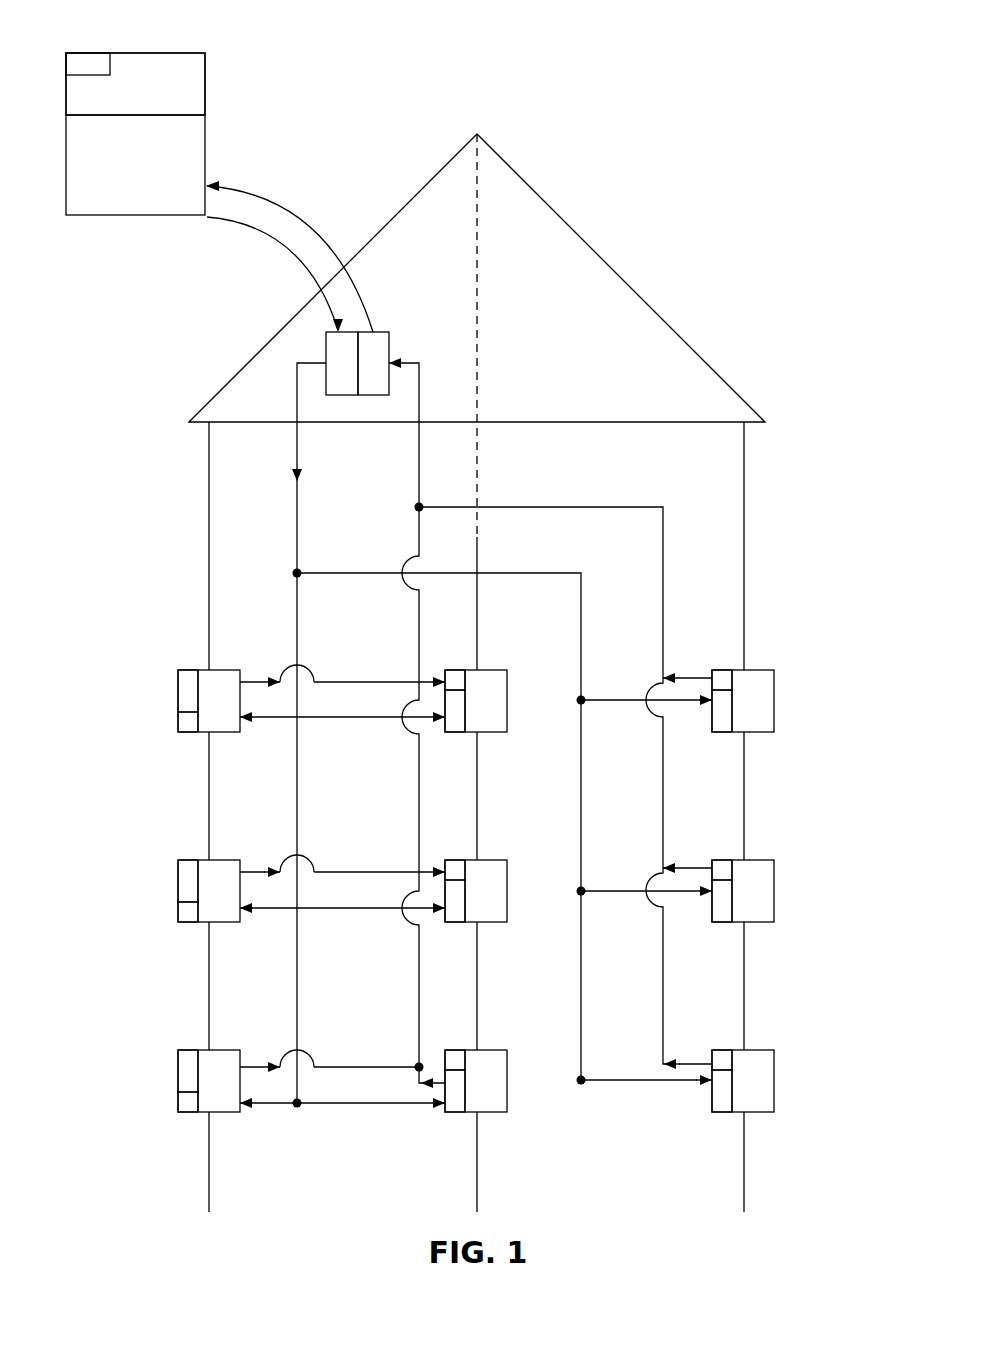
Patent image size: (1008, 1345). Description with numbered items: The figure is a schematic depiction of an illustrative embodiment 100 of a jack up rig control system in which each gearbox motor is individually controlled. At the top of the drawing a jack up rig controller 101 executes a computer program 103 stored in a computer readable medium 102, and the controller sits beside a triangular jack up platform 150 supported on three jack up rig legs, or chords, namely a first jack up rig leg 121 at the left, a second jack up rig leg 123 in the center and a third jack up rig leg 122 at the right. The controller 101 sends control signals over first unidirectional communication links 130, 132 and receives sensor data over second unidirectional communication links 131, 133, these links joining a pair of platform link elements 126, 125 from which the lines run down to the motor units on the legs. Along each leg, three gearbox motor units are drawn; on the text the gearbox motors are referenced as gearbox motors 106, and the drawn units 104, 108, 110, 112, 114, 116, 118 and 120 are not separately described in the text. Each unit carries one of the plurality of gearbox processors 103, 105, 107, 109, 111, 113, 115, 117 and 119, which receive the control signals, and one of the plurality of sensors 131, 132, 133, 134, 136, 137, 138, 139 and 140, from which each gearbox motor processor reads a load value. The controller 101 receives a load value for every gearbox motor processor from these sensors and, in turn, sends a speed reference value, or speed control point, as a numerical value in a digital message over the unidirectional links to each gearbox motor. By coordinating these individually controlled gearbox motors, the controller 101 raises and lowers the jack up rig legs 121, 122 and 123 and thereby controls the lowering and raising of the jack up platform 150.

The jack up rig control system 100 is at (650, 103).
The jack up rig controller 101 is at (103, 217).
The computer readable medium 102 is at (188, 70).
The computer program / gearbox processor 103 is at (88, 62).
The first leg first sensor unit 104 is at (222, 695).
The gearbox processor 105 is at (188, 873).
The gearbox motor 106 is at (222, 885).
The gearbox processor 107 is at (188, 1063).
The first leg third sensor unit 108 is at (222, 1075).
The gearbox processor 109 is at (722, 715).
The third leg first sensor unit 110 is at (757, 683).
The gearbox processor 111 is at (722, 905).
The third leg second sensor unit 112 is at (757, 873).
The gearbox processor 113 is at (722, 1112).
The third leg third sensor unit 114 is at (757, 1067).
The gearbox processor 115 is at (457, 720).
The second leg first sensor unit 116 is at (492, 697).
The gearbox processor 117 is at (457, 910).
The second leg second sensor unit 118 is at (492, 887).
The gearbox processor 119 is at (457, 1100).
The second leg third sensor unit 120 is at (493, 1097).
The jack up rig leg 121 is at (208, 475).
The jack up rig leg 122 is at (748, 512).
The jack up rig leg 123 is at (477, 260).
The second unidirectional link 125 is at (377, 350).
The unidirectional link 126 is at (340, 355).
The first unidirectional communication link 130 is at (233, 227).
The second unidirectional communication link / sensor 131 is at (247, 193).
The first unidirectional communication link / sensor 132 is at (297, 545).
The second unidirectional communication link / sensor 133 is at (419, 480).
The sensor 134 is at (722, 681).
The sensor 136 is at (722, 871).
The sensor 137 is at (722, 1061).
The sensor 138 is at (457, 681).
The sensor 139 is at (457, 871).
The sensor / unidirectional link 140 is at (457, 1061).
The jack up platform 150 is at (607, 338).